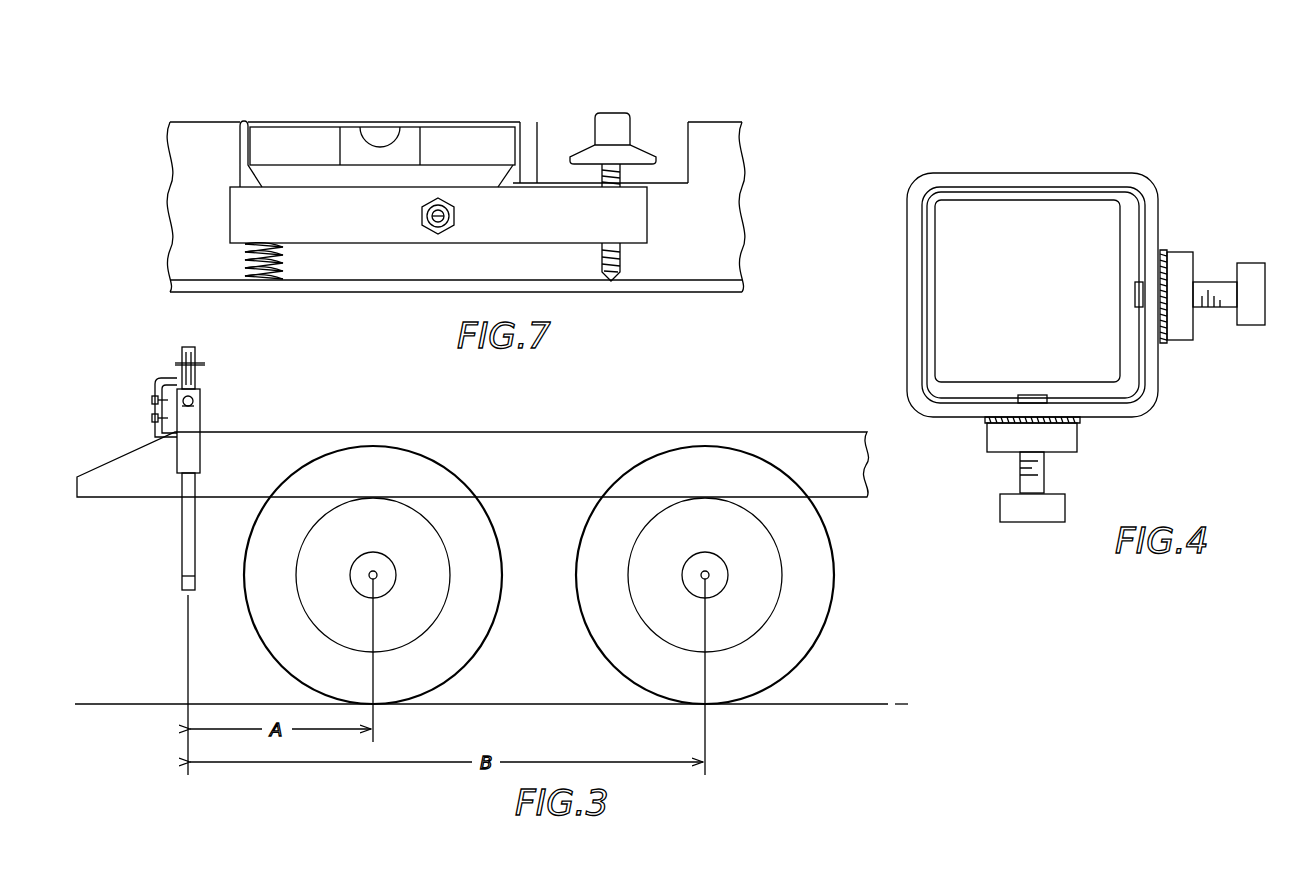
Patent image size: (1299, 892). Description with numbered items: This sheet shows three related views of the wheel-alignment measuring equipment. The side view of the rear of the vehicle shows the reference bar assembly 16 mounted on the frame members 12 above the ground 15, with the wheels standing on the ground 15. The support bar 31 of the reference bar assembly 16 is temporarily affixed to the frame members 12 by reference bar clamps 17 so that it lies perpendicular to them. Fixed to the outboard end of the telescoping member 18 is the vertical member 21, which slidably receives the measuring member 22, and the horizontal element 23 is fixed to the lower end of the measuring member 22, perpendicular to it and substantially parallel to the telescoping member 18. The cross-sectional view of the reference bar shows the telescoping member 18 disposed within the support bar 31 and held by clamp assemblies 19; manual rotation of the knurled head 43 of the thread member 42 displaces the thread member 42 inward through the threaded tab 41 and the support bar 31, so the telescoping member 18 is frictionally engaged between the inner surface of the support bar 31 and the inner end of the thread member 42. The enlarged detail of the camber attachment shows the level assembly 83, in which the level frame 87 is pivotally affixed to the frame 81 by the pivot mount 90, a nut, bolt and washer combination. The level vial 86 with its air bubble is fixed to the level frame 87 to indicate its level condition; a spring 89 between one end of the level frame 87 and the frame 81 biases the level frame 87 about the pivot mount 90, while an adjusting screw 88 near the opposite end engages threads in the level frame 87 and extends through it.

In FIG. 3, the frame members 12 is at (547, 443).
In FIG. 3, the ground 15 is at (840, 704).
In FIG. 3, the reference bar assembly 16 is at (207, 472).
In FIG. 3, the reference bar clamps 17 is at (160, 378).
In FIG. 4, the telescoping member 18 is at (987, 195).
In FIG. 4, the clamp assemblies 19 is at (1256, 336).
In FIG. 3, the vertical member 21 is at (196, 452).
In FIG. 3, the measuring member 22 is at (185, 518).
In FIG. 3, the horizontal element 23 is at (185, 583).
In FIG. 4, the support bar 31 is at (1038, 180).
In FIG. 4, the threaded tab 41 is at (1182, 327).
In FIG. 4, the thread member 42 is at (1205, 290).
In FIG. 4, the knurled head 43 is at (1138, 411).
In FIG. 7, the frame 81 is at (716, 137).
In FIG. 7, the level assembly 83 is at (300, 114).
In FIG. 7, the level vial 86 is at (452, 142).
In FIG. 7, the level frame 87 is at (569, 226).
In FIG. 7, the adjusting screw 88 is at (616, 124).
In FIG. 7, the spring 89 is at (286, 262).
In FIG. 7, the pivot mount 90 is at (452, 216).